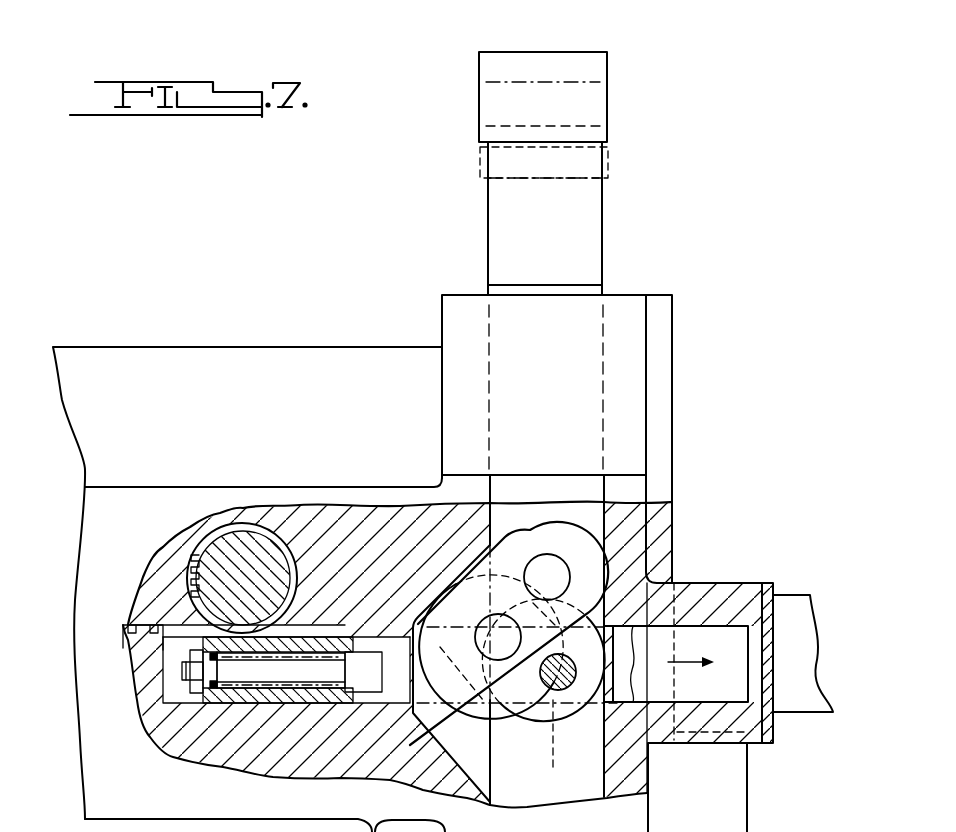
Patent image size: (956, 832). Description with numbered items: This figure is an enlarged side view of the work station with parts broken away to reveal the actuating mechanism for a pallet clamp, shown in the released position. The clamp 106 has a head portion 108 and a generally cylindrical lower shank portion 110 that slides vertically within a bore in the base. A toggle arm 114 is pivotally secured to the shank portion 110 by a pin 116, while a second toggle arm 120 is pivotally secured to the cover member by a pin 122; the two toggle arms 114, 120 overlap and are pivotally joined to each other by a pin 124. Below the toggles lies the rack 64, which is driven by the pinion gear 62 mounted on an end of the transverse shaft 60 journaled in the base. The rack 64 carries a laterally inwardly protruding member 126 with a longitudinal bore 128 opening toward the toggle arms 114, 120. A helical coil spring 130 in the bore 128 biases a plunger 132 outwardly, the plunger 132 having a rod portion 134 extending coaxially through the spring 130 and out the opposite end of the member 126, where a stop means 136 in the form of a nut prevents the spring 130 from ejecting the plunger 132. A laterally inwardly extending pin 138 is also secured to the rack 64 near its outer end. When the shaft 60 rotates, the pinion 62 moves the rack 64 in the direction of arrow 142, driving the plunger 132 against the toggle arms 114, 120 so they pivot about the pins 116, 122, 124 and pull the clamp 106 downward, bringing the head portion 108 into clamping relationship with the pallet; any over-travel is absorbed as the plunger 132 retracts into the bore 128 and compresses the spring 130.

The transverse shaft 60 is at (265, 556).
The pinion gear 62 is at (188, 580).
The rack 64 is at (140, 627).
The clamp 106 is at (581, 52).
The head portion 108 is at (595, 100).
The lower shank portion 110 is at (590, 524).
The toggle arm 114 is at (520, 727).
The pin 116 is at (550, 768).
The second toggle arm 120 is at (577, 558).
The pin 122 is at (562, 572).
The pin 124 is at (423, 722).
The laterally inwardly protruding member 126 is at (343, 623).
The longitudinal bore 128 is at (287, 652).
The helical coil spring 130 is at (330, 682).
The plunger 132 is at (353, 682).
The rod portion 134 is at (255, 680).
The stop means 136 is at (155, 712).
The pin 138 is at (578, 682).
The arrow 142 is at (690, 657).